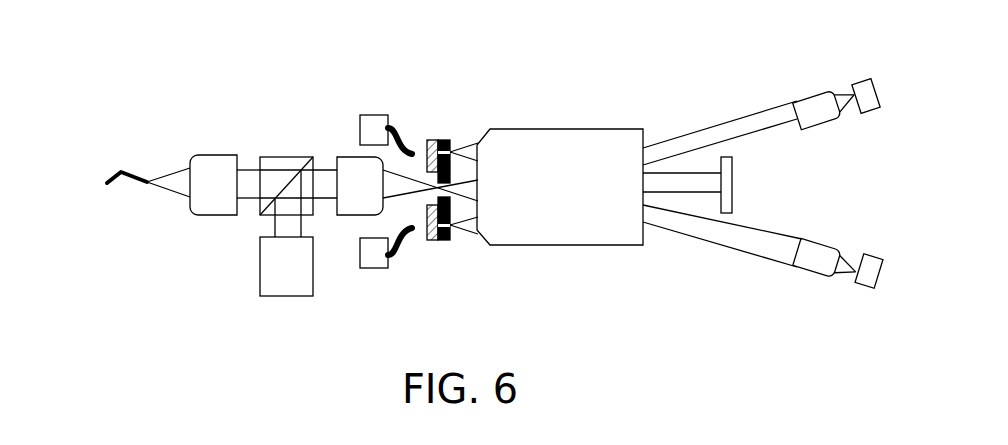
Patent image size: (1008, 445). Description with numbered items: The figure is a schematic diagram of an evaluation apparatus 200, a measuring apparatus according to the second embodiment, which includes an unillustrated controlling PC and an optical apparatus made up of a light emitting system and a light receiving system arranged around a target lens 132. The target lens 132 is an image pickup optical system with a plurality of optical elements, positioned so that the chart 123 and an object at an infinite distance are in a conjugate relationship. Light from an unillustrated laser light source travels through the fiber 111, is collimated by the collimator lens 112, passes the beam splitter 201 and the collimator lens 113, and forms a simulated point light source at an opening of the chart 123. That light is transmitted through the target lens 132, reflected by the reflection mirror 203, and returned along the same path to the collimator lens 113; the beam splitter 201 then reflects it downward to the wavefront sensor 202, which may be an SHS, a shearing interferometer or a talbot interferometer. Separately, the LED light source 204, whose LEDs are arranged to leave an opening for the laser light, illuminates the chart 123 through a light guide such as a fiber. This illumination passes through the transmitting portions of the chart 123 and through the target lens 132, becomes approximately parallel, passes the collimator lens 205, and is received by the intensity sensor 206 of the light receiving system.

The evaluation apparatus 200 is at (548, 37).
The fiber 111 is at (119, 168).
The collimator lens 112 is at (200, 155).
The beam splitter 201 is at (267, 157).
The wavefront sensor 202 is at (286, 266).
The collimator lens 113 is at (336, 157).
The LED light source 204 is at (362, 113).
The chart 123 is at (442, 139).
The target lens 132 is at (570, 129).
The reflection mirror 203 is at (727, 175).
The collimator lens 205 is at (803, 104).
The intensity sensor 206 is at (862, 85).